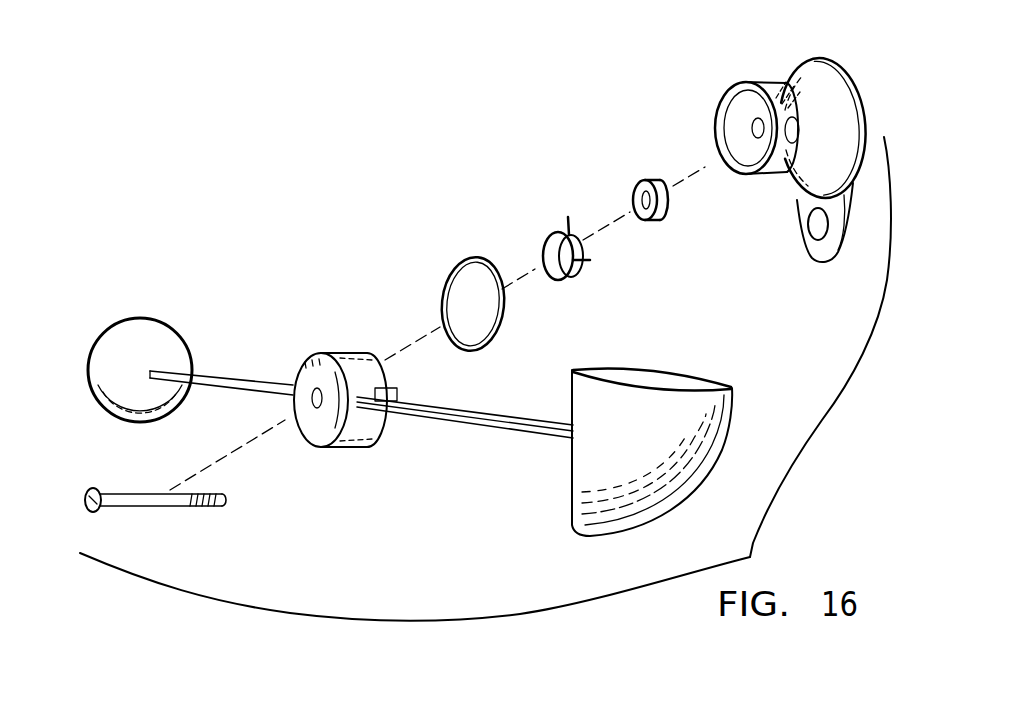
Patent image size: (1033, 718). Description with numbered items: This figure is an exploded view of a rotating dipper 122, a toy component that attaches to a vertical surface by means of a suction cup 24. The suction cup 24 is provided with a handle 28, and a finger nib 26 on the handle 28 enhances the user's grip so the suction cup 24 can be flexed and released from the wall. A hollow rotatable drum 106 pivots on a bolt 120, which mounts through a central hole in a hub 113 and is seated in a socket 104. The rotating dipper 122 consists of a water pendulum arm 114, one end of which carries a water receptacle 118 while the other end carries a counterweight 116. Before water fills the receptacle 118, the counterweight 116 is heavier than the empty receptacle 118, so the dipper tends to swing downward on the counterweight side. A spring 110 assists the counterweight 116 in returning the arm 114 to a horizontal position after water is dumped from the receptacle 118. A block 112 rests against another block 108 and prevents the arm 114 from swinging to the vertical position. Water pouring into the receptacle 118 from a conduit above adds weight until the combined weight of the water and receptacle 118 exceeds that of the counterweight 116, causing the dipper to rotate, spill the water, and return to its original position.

The suction cup 24 is at (822, 78).
The finger nib 26 is at (807, 247).
The handle 28 is at (797, 227).
The socket 104 is at (798, 110).
The hollow rotatable drum 106 is at (767, 88).
The block 108 is at (735, 95).
The spring 110 is at (542, 250).
The block 112 is at (423, 373).
The hub 113 is at (335, 448).
The water pendulum arm 114 is at (233, 377).
The counterweight 116 is at (145, 318).
The water receptacle 118 is at (565, 505).
The bolt 120 is at (142, 497).
The rotating dipper 122 is at (312, 220).